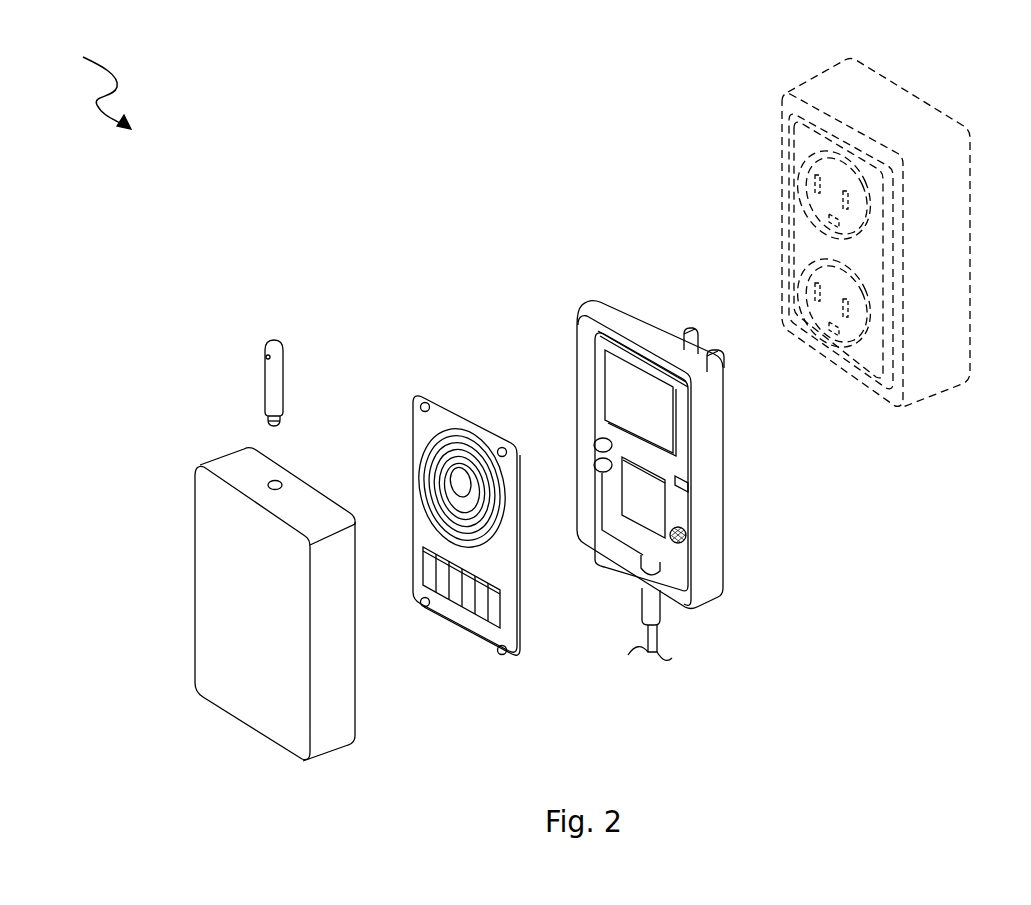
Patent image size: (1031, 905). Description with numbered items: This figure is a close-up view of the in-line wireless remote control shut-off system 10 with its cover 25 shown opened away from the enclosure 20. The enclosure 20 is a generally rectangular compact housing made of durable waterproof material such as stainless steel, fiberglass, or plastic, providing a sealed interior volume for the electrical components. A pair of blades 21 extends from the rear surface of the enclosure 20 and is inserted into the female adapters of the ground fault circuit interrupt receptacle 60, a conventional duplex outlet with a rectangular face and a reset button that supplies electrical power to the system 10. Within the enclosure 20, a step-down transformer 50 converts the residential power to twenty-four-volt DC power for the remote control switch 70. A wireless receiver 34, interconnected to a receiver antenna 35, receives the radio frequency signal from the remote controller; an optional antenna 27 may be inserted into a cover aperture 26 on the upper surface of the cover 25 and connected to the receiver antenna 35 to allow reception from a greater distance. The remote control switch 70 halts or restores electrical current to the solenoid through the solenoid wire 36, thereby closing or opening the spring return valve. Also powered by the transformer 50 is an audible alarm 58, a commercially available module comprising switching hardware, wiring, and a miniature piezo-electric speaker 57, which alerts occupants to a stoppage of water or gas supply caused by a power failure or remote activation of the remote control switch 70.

The in-line wireless remote control shut-off system 10 is at (92, 82).
The enclosure 20 is at (620, 315).
The blade 21 is at (718, 349).
The cover 25 is at (213, 570).
The cover aperture 26 is at (278, 480).
The optional antenna 27 is at (280, 343).
The wireless receiver 34 is at (480, 607).
The receiver antenna 35 is at (438, 423).
The solenoid wire 36 is at (662, 610).
The transformer 50 is at (627, 393).
The speaker 57 is at (688, 538).
The audible alarm 58 is at (690, 483).
The ground fault circuit interrupt (GFCI) receptacle 60 is at (927, 123).
The remote control switch 70 is at (632, 505).